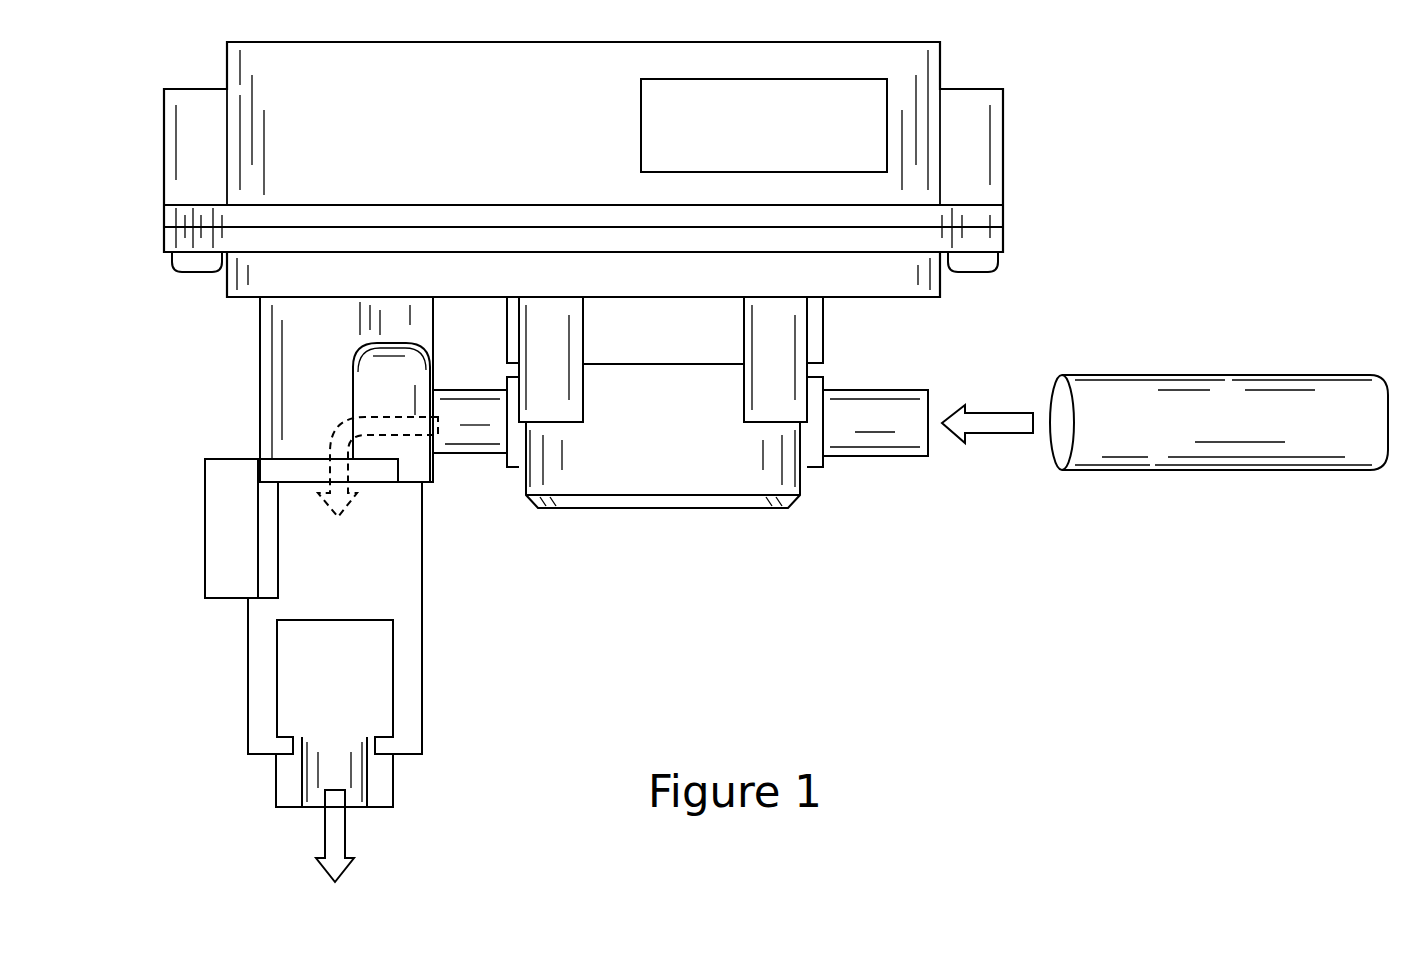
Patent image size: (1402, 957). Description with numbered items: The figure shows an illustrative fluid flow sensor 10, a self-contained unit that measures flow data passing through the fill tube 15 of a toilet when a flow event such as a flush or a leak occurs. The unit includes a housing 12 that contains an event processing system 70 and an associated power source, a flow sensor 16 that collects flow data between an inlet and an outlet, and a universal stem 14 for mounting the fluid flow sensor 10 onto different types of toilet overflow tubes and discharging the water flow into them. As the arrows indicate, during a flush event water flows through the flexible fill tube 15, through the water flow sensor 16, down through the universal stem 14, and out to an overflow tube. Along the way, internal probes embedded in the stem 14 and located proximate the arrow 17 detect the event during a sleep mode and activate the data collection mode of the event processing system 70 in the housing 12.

The fluid flow sensor 10 is at (1120, 310).
The housing 12 is at (583, 169).
The universal stem 14 is at (205, 440).
The fill tube 15 is at (1195, 452).
The flow sensor 16 is at (644, 517).
The arrow 17 is at (400, 425).
The event processing system 70 is at (788, 155).